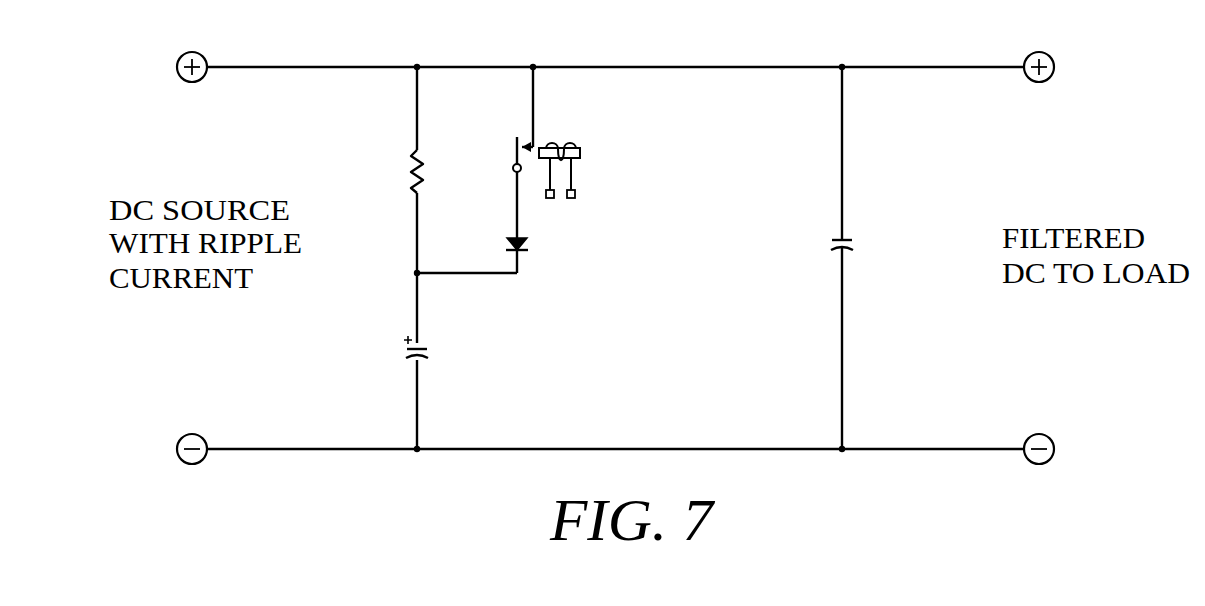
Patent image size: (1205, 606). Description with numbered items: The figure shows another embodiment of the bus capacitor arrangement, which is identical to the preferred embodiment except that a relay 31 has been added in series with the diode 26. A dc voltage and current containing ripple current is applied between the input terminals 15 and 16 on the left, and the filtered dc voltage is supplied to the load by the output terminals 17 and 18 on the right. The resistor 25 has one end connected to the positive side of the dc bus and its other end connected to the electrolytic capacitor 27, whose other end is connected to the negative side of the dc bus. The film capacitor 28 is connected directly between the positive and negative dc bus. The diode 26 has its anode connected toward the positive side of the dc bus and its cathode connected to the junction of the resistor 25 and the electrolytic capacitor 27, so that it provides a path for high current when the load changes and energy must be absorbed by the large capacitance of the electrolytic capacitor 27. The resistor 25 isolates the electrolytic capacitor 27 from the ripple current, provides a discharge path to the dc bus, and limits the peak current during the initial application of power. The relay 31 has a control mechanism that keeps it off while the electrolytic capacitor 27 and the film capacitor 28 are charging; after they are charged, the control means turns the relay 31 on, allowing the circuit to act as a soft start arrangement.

The terminal 15 is at (204, 56).
The terminal 16 is at (206, 445).
The terminal 17 is at (1052, 57).
The terminal 18 is at (1053, 441).
The resistor 25 is at (420, 153).
The diode 26 is at (526, 241).
The electrolytic capacitor 27 is at (420, 348).
The film capacitor 28 is at (845, 238).
The relay 31 is at (580, 148).